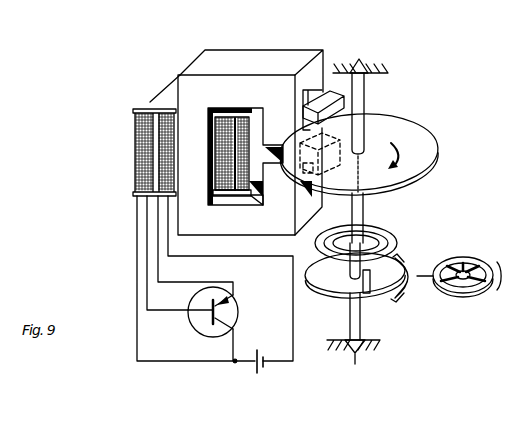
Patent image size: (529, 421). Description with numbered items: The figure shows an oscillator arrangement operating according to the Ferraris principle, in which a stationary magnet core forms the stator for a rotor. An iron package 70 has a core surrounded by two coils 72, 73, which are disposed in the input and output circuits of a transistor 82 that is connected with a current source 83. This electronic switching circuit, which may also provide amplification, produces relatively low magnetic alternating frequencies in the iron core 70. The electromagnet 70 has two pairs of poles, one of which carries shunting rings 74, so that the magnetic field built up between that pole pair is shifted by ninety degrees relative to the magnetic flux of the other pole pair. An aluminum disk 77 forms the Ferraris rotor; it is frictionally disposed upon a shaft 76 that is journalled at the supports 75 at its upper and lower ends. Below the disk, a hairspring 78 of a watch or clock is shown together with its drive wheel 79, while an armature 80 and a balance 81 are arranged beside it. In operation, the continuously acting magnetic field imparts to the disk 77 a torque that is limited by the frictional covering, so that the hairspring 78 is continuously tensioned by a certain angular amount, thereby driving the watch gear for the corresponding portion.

The iron package 70 is at (225, 53).
The coil 72 is at (135, 127).
The coil 73 is at (153, 104).
The shunting rings 74 is at (332, 88).
The journal 75 is at (373, 63).
The shaft 76 is at (367, 96).
The aluminum disk 77 is at (407, 123).
The hairspring 78 is at (397, 230).
The drive wheel 79 is at (378, 295).
The armature 80 is at (404, 296).
The balance 81 is at (459, 293).
The transistor 82 is at (200, 328).
The current source 83 is at (252, 372).